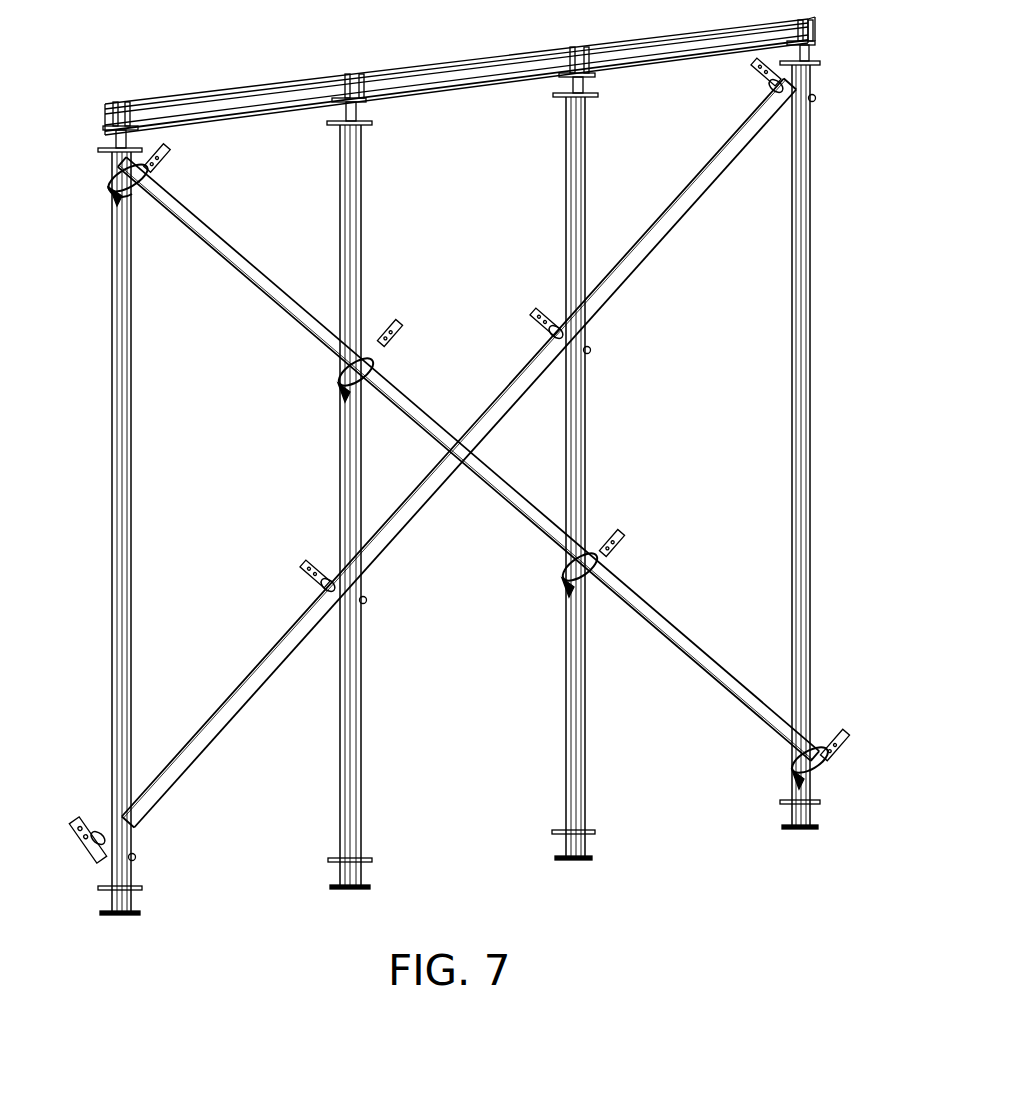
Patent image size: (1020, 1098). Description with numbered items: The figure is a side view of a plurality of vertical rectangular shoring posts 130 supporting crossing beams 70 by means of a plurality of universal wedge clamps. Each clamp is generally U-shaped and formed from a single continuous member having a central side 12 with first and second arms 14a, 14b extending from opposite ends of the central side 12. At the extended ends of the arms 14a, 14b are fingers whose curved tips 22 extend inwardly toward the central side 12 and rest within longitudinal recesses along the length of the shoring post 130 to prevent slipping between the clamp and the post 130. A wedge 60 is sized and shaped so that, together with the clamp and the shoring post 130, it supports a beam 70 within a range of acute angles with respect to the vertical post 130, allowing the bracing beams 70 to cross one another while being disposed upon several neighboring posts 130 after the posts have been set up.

The central side 12 is at (152, 172).
The first arm 14a is at (145, 150).
The second arm 14b is at (115, 196).
The tip 22 is at (135, 833).
The wedge 60 is at (170, 150).
The beam 70 is at (210, 740).
The rectangular shoring post 130 is at (112, 385).